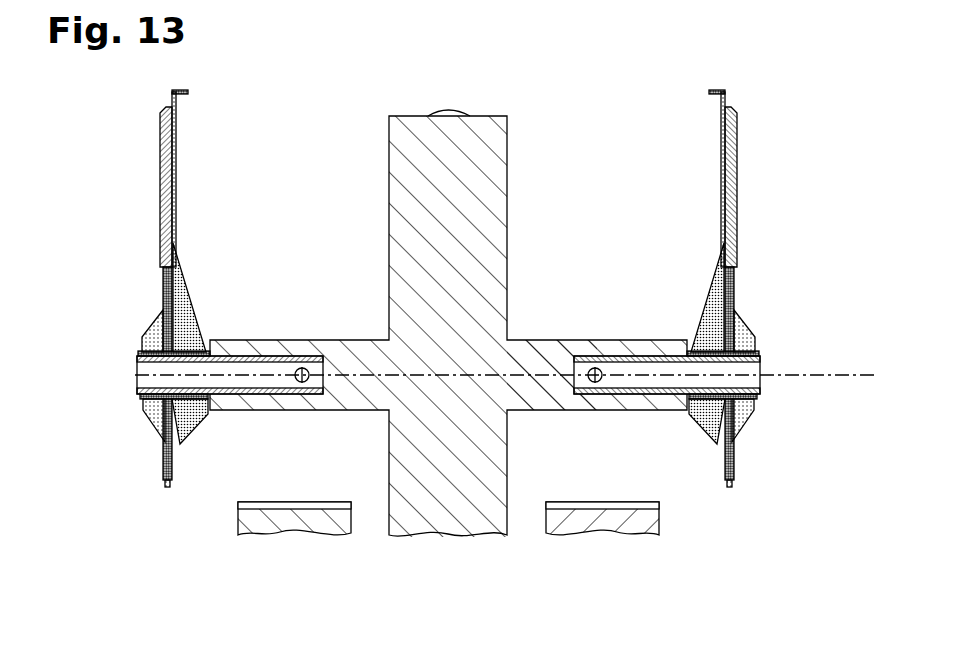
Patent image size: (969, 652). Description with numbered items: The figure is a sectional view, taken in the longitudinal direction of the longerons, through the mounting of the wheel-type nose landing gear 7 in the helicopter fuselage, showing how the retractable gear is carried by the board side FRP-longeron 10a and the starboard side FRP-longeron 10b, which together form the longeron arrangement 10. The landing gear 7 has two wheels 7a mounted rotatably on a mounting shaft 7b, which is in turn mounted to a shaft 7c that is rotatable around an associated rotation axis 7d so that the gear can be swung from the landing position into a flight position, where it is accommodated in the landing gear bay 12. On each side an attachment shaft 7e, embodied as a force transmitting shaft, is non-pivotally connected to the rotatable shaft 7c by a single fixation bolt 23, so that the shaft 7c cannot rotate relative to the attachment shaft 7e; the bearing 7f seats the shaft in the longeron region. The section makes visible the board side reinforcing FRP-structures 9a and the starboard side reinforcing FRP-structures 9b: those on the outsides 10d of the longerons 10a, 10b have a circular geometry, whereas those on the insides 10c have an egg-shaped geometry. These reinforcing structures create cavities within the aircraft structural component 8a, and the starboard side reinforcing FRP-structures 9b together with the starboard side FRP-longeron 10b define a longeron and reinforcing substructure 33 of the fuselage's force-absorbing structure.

The wheel-type nose landing gear 7 is at (228, 531).
The wheels 7a is at (314, 528).
The mounting shaft 7b is at (463, 528).
The shaft 7c is at (545, 360).
The rotation axis 7d is at (866, 370).
The attachment shaft 7e is at (263, 352).
The bearing sleeve 7f is at (138, 392).
The aircraft structural component 8a is at (206, 310).
The board side reinforcing FRP-structures 9a is at (695, 280).
The starboard side reinforcing FRP-structures 9b is at (198, 280).
The rotor plate assembly 10 is at (116, 166).
The board side FRP-longeron 10a is at (741, 127).
The starboard side FRP-longeron 10b is at (156, 127).
The inside 10c is at (176, 177).
The outside 10d is at (160, 264).
The landing gear bay 12 is at (326, 176).
The fixation bolt 23 is at (303, 367).
The longeron and reinforcing substructure 33 is at (200, 443).